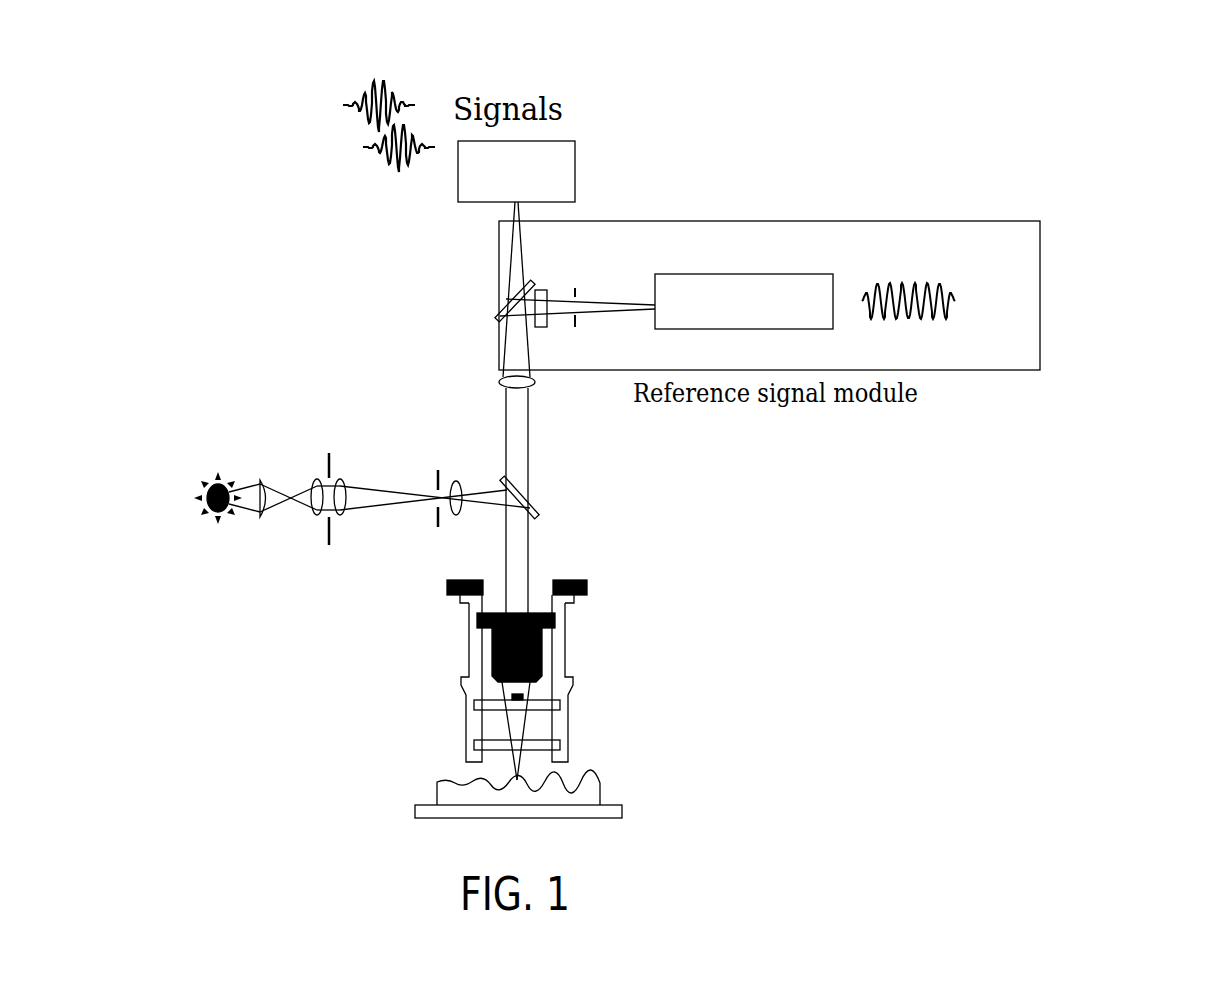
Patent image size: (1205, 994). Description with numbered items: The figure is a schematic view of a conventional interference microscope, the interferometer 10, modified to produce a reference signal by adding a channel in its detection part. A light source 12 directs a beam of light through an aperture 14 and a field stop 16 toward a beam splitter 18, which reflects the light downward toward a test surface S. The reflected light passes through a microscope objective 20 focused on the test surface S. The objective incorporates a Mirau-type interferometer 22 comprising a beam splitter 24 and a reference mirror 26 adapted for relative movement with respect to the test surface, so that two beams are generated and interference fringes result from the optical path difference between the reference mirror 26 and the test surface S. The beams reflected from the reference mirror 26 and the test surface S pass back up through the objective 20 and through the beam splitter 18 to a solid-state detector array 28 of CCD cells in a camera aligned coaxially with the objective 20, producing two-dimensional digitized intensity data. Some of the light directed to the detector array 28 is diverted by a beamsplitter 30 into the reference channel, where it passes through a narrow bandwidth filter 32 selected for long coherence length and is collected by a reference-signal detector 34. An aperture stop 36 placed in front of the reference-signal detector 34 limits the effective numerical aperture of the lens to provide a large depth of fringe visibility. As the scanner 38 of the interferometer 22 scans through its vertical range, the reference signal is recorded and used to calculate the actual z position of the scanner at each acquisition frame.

The interferometer 10 is at (740, 186).
The light source 12 is at (217, 472).
The aperture 14 is at (330, 453).
The field stop 16 is at (439, 470).
The beam splitter 18 is at (542, 512).
The microscope objective 20 is at (540, 658).
The interferometer 22 is at (570, 725).
The beam splitter 24 is at (490, 738).
The reference mirror 26 is at (543, 710).
The detector array 28 is at (575, 163).
The beamsplitter 30 is at (502, 312).
The narrow bandwidth filter 32 is at (536, 290).
The reference-signal detector 34 is at (785, 274).
The aperture stop 36 is at (578, 292).
The scanner 38 is at (573, 605).
The test surface S is at (582, 782).